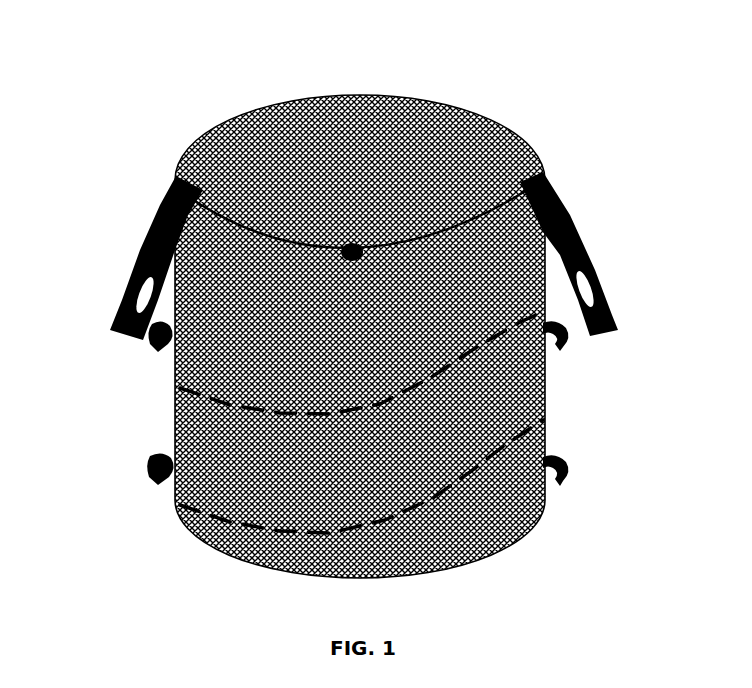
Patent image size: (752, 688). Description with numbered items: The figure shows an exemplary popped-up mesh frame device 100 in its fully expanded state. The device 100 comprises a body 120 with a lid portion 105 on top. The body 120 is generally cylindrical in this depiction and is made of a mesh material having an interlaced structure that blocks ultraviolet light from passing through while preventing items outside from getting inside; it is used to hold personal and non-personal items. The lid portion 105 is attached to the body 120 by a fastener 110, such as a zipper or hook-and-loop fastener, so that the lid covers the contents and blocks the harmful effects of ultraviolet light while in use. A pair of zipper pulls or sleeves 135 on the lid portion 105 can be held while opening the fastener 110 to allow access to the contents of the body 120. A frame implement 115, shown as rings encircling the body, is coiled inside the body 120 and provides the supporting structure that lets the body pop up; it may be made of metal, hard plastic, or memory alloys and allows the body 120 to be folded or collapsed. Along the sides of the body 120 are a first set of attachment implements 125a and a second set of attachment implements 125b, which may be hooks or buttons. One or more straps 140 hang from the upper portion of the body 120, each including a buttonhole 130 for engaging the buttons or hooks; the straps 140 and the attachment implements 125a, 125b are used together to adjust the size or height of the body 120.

The device 100 is at (244, 57).
The lid portion 105 is at (433, 140).
The fastener 110 is at (520, 146).
The frame implement 115 is at (527, 423).
The body 120 is at (500, 517).
The first set of attachment implements 125a is at (152, 343).
The second set of attachment implements 125b is at (148, 466).
The buttonhole 130 is at (147, 300).
The sleeves 135 is at (370, 275).
The straps 140 is at (148, 243).